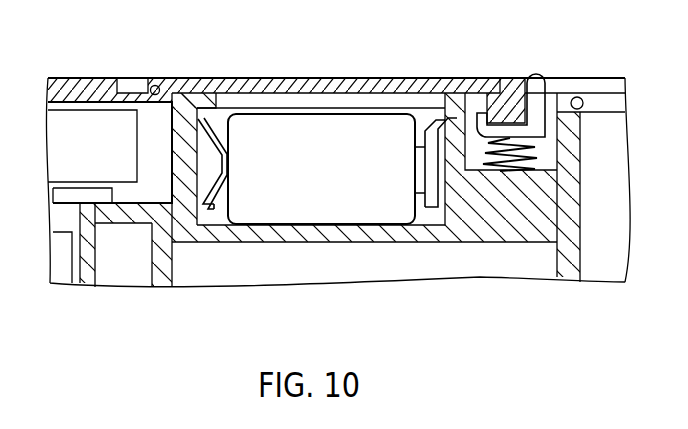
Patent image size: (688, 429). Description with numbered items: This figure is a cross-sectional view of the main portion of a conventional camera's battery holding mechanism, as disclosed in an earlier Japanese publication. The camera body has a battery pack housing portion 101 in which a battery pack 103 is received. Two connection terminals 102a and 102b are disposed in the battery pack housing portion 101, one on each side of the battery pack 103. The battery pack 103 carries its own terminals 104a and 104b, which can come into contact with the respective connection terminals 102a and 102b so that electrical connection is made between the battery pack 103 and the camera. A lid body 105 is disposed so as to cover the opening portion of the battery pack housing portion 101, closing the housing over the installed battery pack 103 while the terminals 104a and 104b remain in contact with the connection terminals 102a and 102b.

The battery pack housing portion 101 is at (227, 77).
The connection terminal 102a is at (428, 124).
The connection terminal 102b is at (218, 122).
The battery pack 103 is at (288, 137).
The terminal 104a is at (423, 188).
The terminal 104b is at (205, 207).
The lid body 105 is at (333, 84).